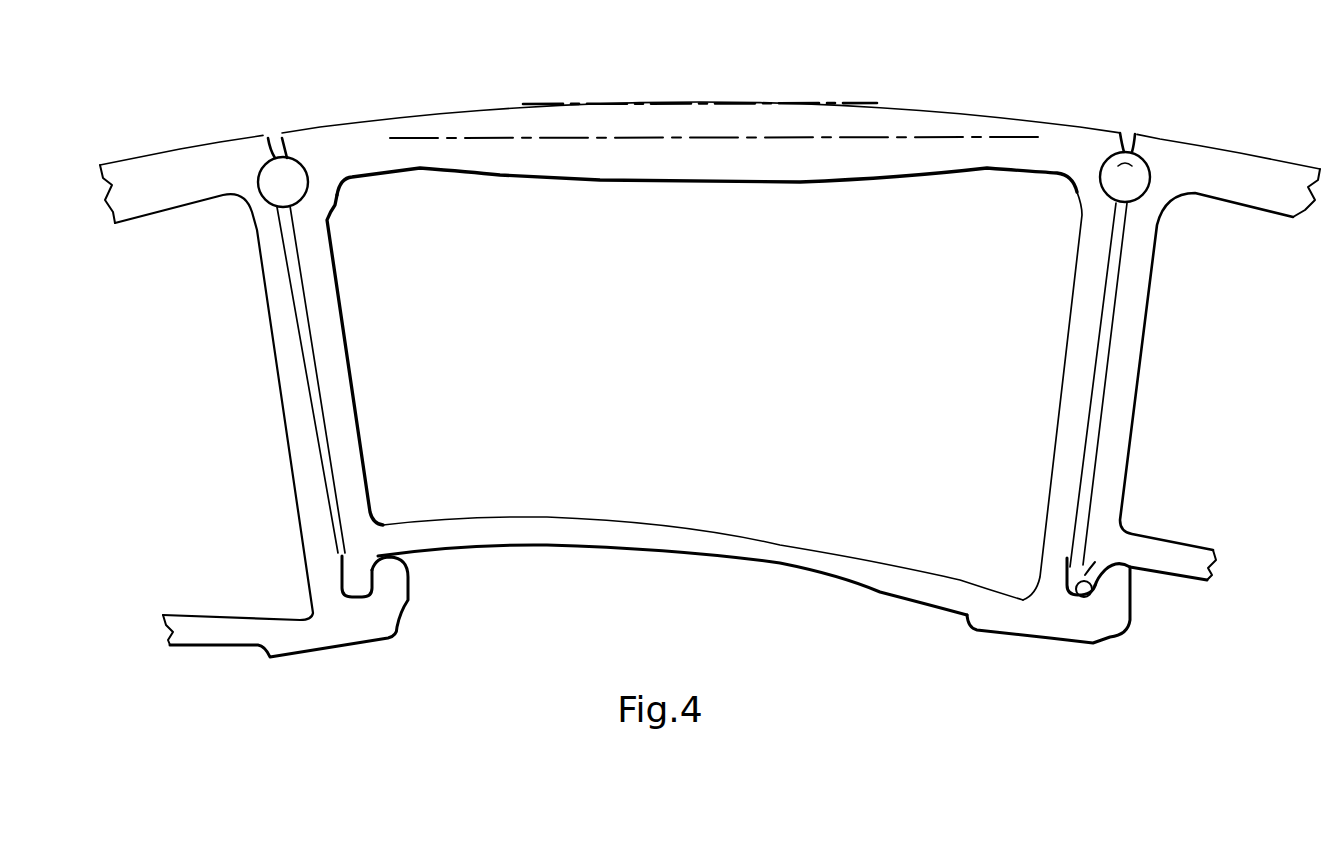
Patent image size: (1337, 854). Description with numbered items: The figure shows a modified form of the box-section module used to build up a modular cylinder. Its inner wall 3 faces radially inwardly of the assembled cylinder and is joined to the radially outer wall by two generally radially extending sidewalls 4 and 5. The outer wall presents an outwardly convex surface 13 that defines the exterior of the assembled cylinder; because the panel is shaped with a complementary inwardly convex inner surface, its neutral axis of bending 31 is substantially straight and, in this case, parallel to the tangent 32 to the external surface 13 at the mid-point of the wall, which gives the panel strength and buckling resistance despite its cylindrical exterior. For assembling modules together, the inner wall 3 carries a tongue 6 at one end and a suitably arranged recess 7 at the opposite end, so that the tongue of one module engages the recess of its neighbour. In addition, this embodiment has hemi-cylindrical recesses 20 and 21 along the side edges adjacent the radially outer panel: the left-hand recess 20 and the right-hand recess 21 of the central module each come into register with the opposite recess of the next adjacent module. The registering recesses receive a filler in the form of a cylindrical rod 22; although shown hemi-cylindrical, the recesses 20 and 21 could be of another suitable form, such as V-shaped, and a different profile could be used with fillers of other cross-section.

The inner wall 3 is at (912, 588).
The sidewall 4 is at (328, 302).
The sidewall 5 is at (1053, 468).
The tongue 6 is at (1088, 570).
The recess 7 is at (1075, 595).
The outwardly convex surface 13 is at (1025, 118).
The hemi-cylindrical recess 20 is at (300, 165).
The hemi-cylindrical recess 21 is at (266, 172).
The cylindrical rod 22 is at (1123, 172).
The neutral axis of bending 31 is at (505, 139).
The tangent 32 is at (857, 103).